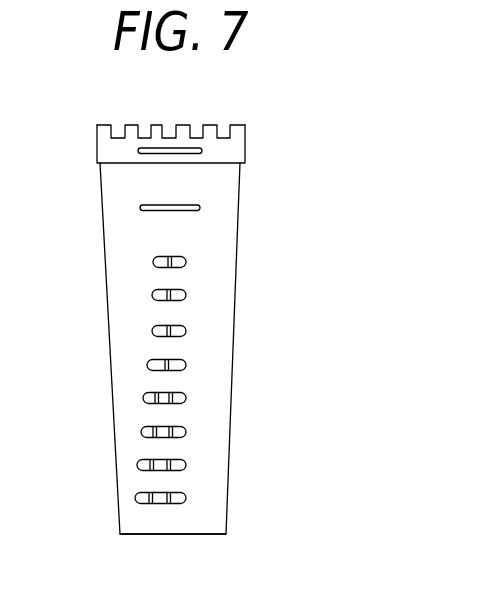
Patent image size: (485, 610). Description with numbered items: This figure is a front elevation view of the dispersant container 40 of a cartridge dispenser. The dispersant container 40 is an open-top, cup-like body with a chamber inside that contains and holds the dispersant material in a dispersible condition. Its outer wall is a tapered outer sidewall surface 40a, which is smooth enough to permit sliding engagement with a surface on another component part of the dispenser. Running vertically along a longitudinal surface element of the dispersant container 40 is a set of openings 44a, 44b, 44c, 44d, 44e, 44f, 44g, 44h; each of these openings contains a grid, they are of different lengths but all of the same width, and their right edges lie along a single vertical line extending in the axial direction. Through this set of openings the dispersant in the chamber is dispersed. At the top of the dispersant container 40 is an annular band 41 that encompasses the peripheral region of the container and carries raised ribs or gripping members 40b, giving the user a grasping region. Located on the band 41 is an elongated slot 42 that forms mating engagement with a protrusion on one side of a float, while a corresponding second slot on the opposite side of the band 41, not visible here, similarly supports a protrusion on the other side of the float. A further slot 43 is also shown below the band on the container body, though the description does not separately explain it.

The dispersant container 40 is at (96, 235).
The tapered outer sidewall surface 40a is at (207, 515).
The raised ribs or gripping members 40b is at (172, 122).
The annular band 41 is at (97, 143).
The elongated slot 42 is at (183, 155).
The slot in container body 43 is at (160, 206).
The opening 44a is at (186, 498).
The opening 44b is at (186, 465).
The opening 44c is at (186, 432).
The opening 44d is at (186, 398).
The opening 44e is at (186, 365).
The opening 44f is at (186, 331).
The opening 44g is at (186, 295).
The opening 44h is at (186, 262).